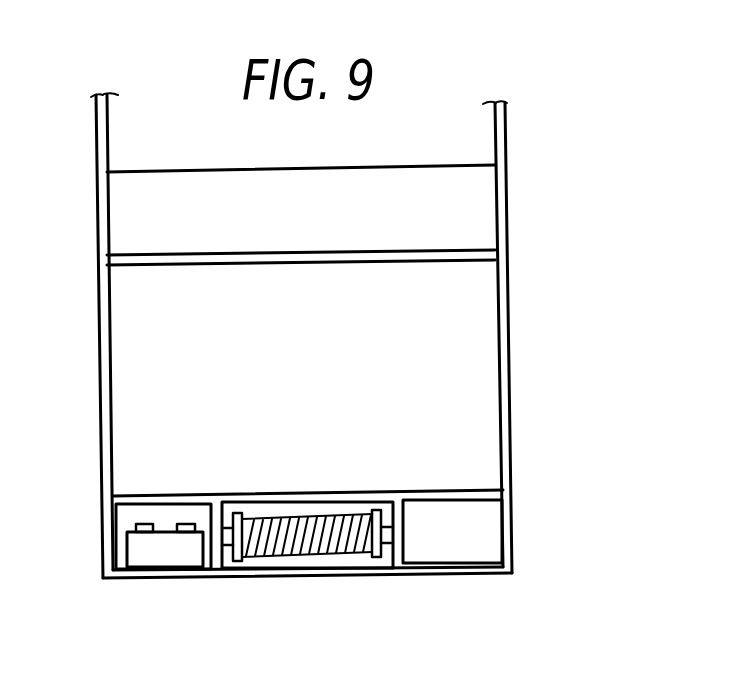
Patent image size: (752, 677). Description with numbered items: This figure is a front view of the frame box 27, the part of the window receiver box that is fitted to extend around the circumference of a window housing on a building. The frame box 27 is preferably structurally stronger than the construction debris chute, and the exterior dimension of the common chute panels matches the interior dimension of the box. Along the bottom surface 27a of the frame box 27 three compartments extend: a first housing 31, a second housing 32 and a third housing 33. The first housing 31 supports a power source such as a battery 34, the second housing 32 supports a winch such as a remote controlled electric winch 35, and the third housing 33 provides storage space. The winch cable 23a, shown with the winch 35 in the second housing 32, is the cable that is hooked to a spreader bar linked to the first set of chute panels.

The frame box 27 is at (535, 183).
The bottom surface 27a is at (456, 488).
The first housing 31 is at (167, 515).
The second housing 32 is at (290, 510).
The third housing 33 is at (466, 544).
The battery 34 is at (167, 557).
The remote controlled electric winch 35 is at (303, 568).
The winch cable 23a is at (337, 547).